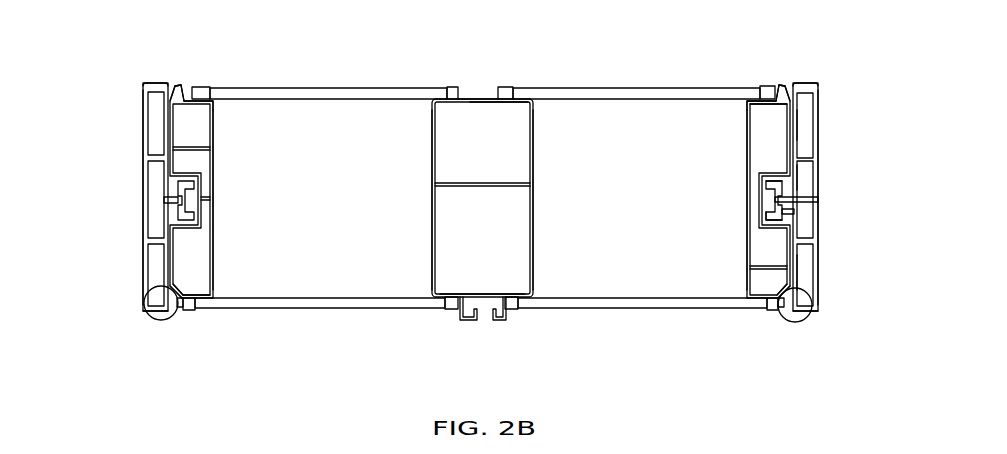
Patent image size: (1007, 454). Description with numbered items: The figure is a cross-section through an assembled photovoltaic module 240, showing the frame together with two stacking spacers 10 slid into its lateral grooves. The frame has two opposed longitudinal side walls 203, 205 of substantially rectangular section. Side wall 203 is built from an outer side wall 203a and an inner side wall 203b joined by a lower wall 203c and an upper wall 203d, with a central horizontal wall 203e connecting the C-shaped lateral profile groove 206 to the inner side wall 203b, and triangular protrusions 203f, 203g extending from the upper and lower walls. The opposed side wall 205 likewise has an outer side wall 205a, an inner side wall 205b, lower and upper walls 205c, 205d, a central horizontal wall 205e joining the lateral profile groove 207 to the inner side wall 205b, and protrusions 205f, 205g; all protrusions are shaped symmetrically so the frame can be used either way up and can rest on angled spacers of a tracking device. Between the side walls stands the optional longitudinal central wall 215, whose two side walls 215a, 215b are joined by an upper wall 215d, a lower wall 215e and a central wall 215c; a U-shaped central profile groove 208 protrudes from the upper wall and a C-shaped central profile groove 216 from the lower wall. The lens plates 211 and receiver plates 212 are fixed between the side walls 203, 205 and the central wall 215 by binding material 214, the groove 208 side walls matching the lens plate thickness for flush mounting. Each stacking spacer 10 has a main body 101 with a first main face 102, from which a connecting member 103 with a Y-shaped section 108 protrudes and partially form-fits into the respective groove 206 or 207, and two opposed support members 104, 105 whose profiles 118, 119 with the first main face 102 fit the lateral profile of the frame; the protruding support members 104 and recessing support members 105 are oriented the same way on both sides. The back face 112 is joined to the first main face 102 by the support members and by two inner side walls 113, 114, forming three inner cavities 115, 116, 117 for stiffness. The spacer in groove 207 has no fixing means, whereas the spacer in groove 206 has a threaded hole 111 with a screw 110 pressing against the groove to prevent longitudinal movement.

The stacking spacer 10 is at (124, 106).
The main body 101 is at (823, 309).
The first main face 102 is at (165, 217).
The connecting member 103 is at (172, 183).
The support member 104 is at (146, 318).
The support member 105 is at (145, 84).
The Y-shaped section 108 is at (175, 197).
The screw 110 is at (818, 201).
The threaded hole 111 is at (765, 187).
The back face 112 is at (148, 143).
The inner side wall 113 is at (803, 247).
The inner side wall 114 is at (817, 152).
The inner cavity 115 is at (804, 272).
The inner cavity 116 is at (806, 172).
The inner cavity 117 is at (806, 125).
The profile 118 is at (150, 318).
The profile 119 is at (180, 88).
The side wall 203 is at (757, 201).
The outer side wall 203a is at (785, 118).
The inner side wall 203b is at (748, 147).
The lower wall 203c is at (763, 293).
The upper wall 203d is at (750, 100).
The central horizontal wall 203e is at (763, 209).
The protrusion 203f is at (780, 90).
The protrusion 203g is at (781, 310).
The side wall 205 is at (181, 184).
The outer side wall 205a is at (206, 300).
The inner side wall 205b is at (215, 160).
The lower wall 205c is at (172, 288).
The upper wall 205d is at (212, 98).
The central horizontal wall 205e is at (213, 199).
The protrusion 205f is at (182, 90).
The protrusion 205g is at (180, 310).
The lateral profile groove 206 is at (772, 213).
The lateral profile groove 207 is at (186, 200).
The central profile groove 208 is at (480, 85).
The lens plate 211 is at (288, 88).
The receiver plate 212 is at (288, 309).
The binding material 214 is at (195, 88).
The longitudinal central wall 215 is at (497, 148).
The side wall 215a is at (433, 200).
The side wall 215b is at (534, 195).
The central wall 215c is at (457, 183).
The upper wall 215d is at (502, 102).
The lower wall 215e is at (490, 296).
The central profile groove 216 is at (481, 322).
The assembled photovoltaic module 240 is at (356, 357).